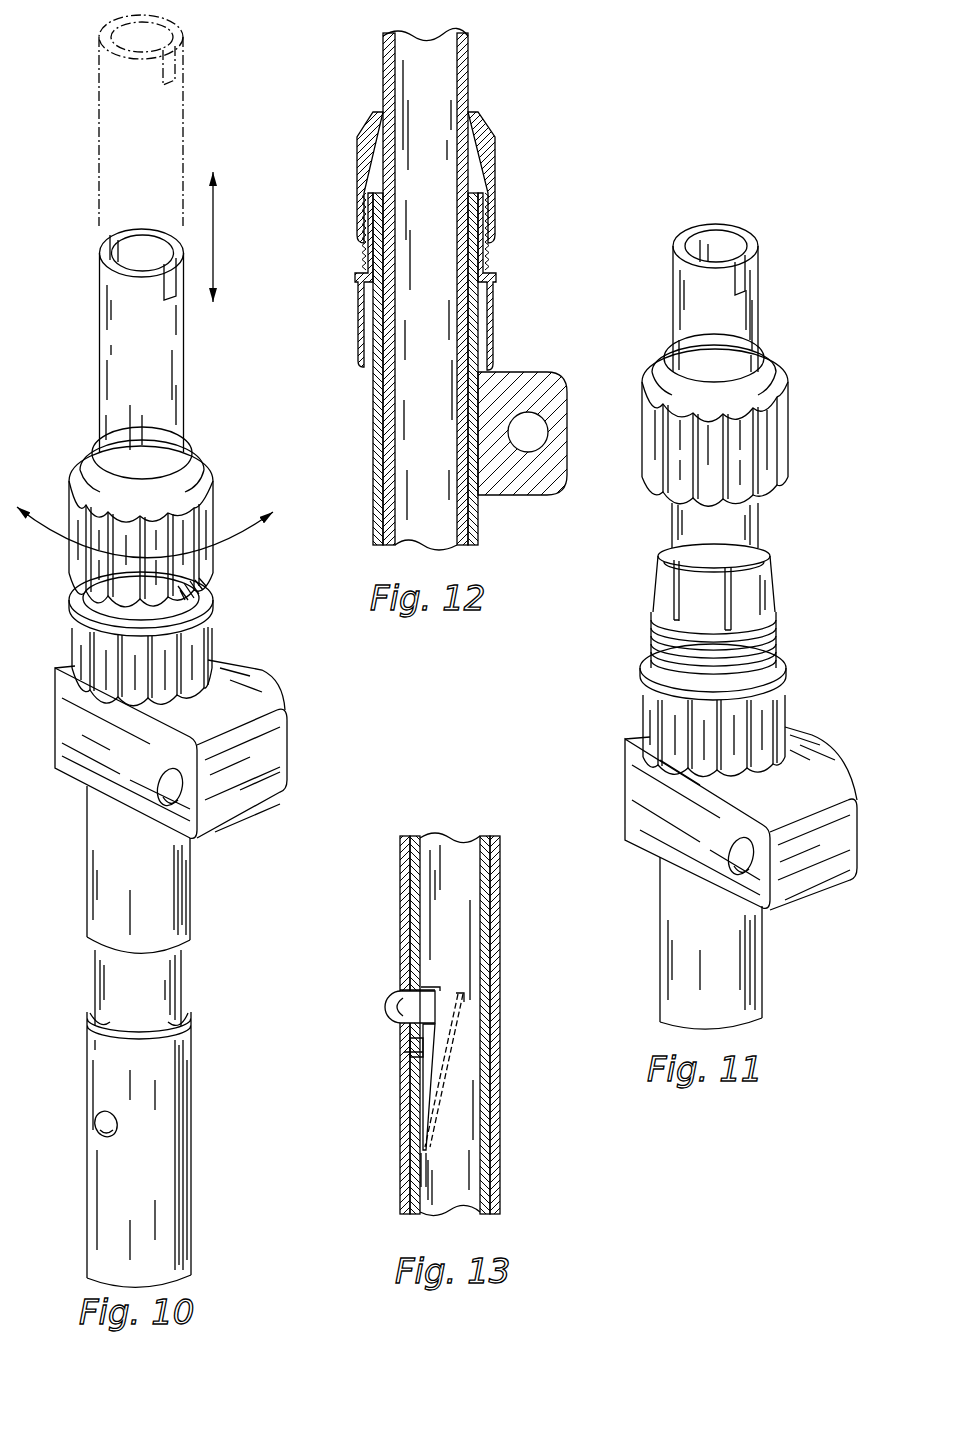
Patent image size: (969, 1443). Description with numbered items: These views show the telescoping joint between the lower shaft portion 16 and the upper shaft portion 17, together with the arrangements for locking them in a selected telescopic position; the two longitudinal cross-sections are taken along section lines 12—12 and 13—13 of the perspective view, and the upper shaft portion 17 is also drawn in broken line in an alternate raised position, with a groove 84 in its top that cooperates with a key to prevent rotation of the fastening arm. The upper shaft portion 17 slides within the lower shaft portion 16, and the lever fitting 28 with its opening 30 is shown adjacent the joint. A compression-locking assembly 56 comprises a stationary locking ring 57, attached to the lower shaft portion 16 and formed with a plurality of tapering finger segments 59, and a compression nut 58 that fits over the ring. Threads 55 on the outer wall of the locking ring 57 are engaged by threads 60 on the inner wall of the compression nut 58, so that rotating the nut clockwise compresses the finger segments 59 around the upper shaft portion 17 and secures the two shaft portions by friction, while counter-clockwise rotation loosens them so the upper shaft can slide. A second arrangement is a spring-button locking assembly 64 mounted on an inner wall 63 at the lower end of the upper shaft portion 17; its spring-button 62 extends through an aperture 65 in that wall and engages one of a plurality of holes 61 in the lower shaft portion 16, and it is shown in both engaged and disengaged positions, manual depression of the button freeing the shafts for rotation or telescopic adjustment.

In FIG. 10, the section line 12— 12 is at (127, 425).
In FIG. 10, the section line 13— 13 is at (155, 1098).
In FIG. 10, the lower shaft portion 16 is at (185, 911).
In FIG. 12, the lower shaft portion 16 is at (478, 512).
In FIG. 13, the lower shaft portion 16 is at (500, 985).
In FIG. 11, the lower shaft portion 16 is at (736, 959).
In FIG. 10, the upper shaft portion 17 is at (117, 333).
In FIG. 12, the upper shaft portion 17 is at (468, 87).
In FIG. 13, the upper shaft portion 17 is at (481, 870).
In FIG. 11, the upper shaft portion 17 is at (715, 386).
In FIG. 10, the mounting bracket 28 is at (252, 748).
In FIG. 12, the mounting bracket 28 is at (567, 460).
In FIG. 11, the mounting bracket 28 is at (802, 757).
In FIG. 10, the bracket hole 30 is at (187, 790).
In FIG. 12, the bracket hole 30 is at (525, 428).
In FIG. 11, the bracket hole 30 is at (745, 856).
In FIG. 10, the threads 55 is at (203, 593).
In FIG. 12, the threads 55 is at (366, 253).
In FIG. 11, the threads 55 is at (656, 638).
In FIG. 10, the compression-locking assembly 56 is at (46, 593).
In FIG. 10, the stationary locking ring 57 is at (198, 642).
In FIG. 12, the stationary locking ring 57 is at (487, 253).
In FIG. 11, the stationary locking ring 57 is at (797, 633).
In FIG. 10, the compression nut 58 is at (197, 511).
In FIG. 12, the compression nut 58 is at (497, 153).
In FIG. 11, the compression nut 58 is at (770, 431).
In FIG. 11, the tapering finger segments 59 is at (768, 567).
In FIG. 12, the threads 60 is at (374, 203).
In FIG. 10, the holes 61 is at (121, 1118).
In FIG. 13, the holes 61 is at (400, 991).
In FIG. 10, the spring-button 62 is at (95, 1122).
In FIG. 13, the spring-button 62 is at (385, 1011).
In FIG. 13, the inner wall 63 is at (426, 1182).
In FIG. 13, the spring-button locking assembly 64 is at (459, 1060).
In FIG. 13, the aperture 65 is at (420, 989).
In FIG. 11, the groove 84 is at (748, 281).